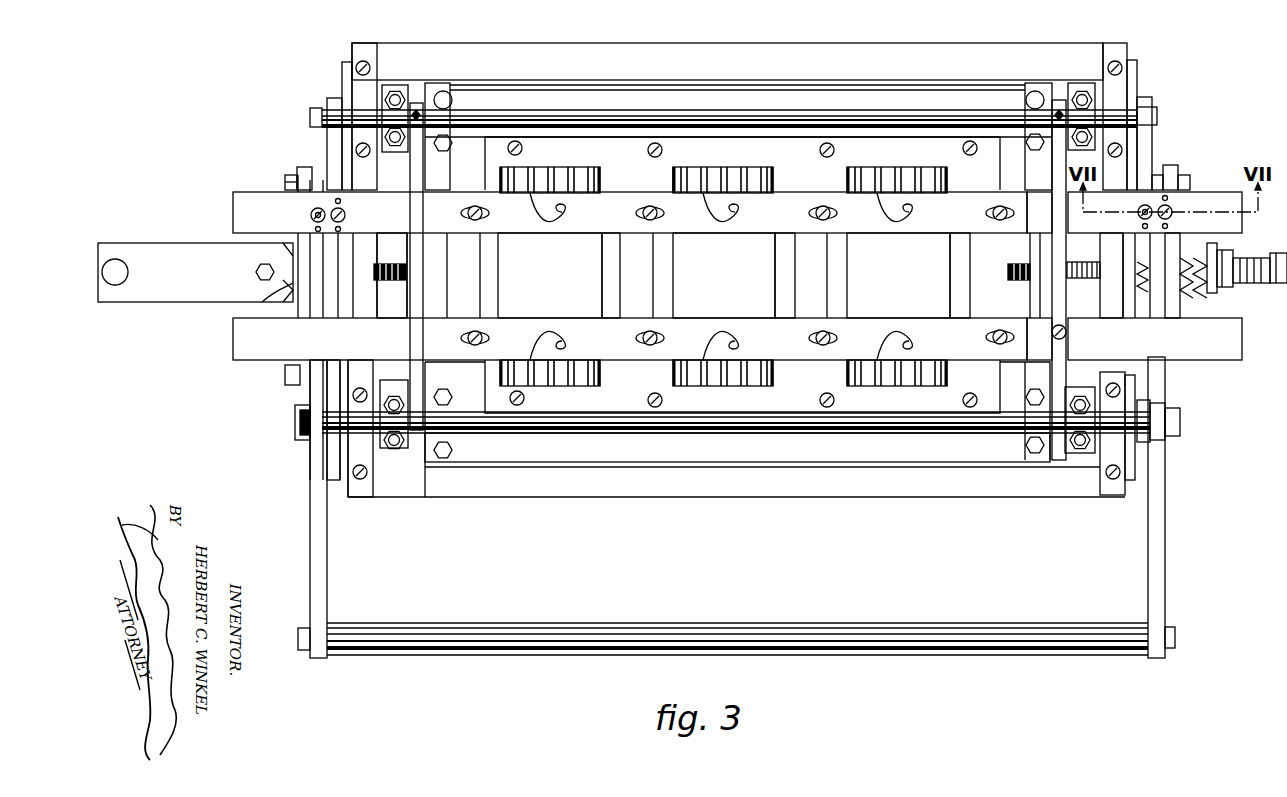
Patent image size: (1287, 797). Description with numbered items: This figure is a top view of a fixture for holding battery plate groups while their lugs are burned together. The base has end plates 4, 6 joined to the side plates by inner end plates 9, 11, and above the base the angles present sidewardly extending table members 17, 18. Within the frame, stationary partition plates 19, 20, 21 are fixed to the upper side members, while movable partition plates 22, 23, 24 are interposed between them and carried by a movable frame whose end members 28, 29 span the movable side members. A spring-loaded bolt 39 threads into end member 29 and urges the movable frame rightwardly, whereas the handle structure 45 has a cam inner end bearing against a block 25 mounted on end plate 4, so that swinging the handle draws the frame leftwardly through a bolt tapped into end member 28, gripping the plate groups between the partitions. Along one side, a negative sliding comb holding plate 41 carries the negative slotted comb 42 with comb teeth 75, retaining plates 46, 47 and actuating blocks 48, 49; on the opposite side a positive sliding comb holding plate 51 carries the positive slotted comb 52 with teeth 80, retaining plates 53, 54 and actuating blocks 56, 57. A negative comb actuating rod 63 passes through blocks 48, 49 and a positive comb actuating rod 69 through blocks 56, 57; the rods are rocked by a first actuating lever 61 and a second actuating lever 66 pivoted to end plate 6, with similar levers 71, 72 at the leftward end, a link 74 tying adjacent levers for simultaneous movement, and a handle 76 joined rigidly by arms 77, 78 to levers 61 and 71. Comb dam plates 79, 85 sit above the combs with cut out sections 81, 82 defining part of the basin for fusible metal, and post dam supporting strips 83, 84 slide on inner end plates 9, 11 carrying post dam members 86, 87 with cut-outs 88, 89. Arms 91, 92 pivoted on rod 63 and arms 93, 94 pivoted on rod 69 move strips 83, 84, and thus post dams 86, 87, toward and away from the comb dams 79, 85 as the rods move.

The end plate 4 is at (343, 77).
The end plate 6 is at (1128, 482).
The inner end plate 9 is at (1112, 297).
The inner end plate 11 is at (365, 295).
The table member 17 is at (832, 490).
The table member 18 is at (805, 47).
The stationary partition plate 19 is at (490, 301).
The stationary partition plate 20 is at (664, 298).
The stationary partition plate 21 is at (837, 298).
The movable partition plate 22 is at (612, 297).
The movable partition plate 23 is at (782, 297).
The movable partition plate 24 is at (957, 285).
The block 25 is at (265, 295).
The movable frame end member 28 is at (438, 295).
The movable frame end member 29 is at (1040, 298).
The bolt 39 is at (1278, 284).
The negative sliding comb holding plate 41 is at (1003, 470).
The negative slotted comb 42 is at (935, 455).
The handle structure 45 is at (160, 305).
The retaining plate 46 is at (1108, 487).
The retaining plate 47 is at (360, 490).
The actuating block 48 is at (1072, 455).
The actuating block 49 is at (398, 455).
The positive sliding comb holding plate 51 is at (835, 82).
The positive slotted comb 52 is at (862, 95).
The retaining plate 53 is at (366, 82).
The retaining plate 54 is at (1118, 49).
The actuating block 56 is at (404, 117).
The actuating block 57 is at (1073, 88).
The first actuating lever 61 is at (1170, 440).
The negative comb actuating rod 63 is at (812, 424).
The second actuating lever 66 is at (1144, 142).
The positive comb actuating rod 69 is at (742, 116).
The actuating lever 71 is at (332, 395).
The actuating lever 72 is at (330, 147).
The link 74 is at (305, 167).
The comb teeth 75 is at (678, 180).
The handle 76 is at (785, 633).
The arm 77 is at (1155, 573).
The arm 78 is at (318, 601).
The comb dam plate 79 is at (844, 366).
The comb teeth 80 is at (730, 378).
The cut out section 81 is at (597, 378).
The cut out section 82 is at (598, 172).
The post dam supporting strip 83 is at (1225, 220).
The post dam supporting strip 84 is at (1222, 333).
The comb dam plate 85 is at (932, 142).
The post dam member 86 is at (984, 333).
The post dam member 87 is at (995, 194).
The cut-out 88 is at (562, 341).
The cut-out 89 is at (562, 212).
The arm 91 is at (1158, 305).
The arm 92 is at (318, 395).
The arm 93 is at (1058, 244).
The arm 94 is at (412, 215).